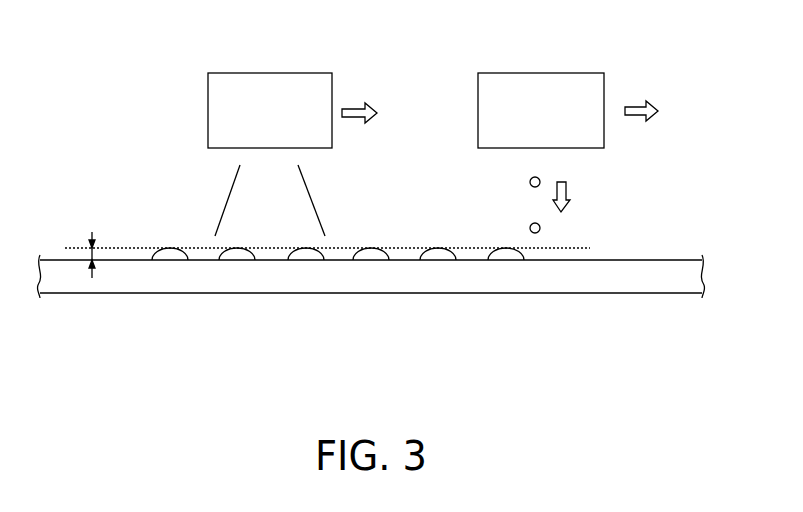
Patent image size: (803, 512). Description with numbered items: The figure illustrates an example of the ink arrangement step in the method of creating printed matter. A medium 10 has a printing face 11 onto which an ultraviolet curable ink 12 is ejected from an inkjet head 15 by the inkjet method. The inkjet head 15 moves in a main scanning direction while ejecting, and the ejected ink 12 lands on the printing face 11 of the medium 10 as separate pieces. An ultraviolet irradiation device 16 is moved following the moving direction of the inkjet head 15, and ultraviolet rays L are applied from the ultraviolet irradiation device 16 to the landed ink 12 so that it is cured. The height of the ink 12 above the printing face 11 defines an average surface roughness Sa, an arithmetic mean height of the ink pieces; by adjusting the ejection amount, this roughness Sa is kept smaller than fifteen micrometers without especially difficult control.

The medium 10 is at (609, 295).
The printing face 11 is at (660, 258).
The ink 12 is at (503, 252).
The inkjet head 15 is at (550, 80).
The ultraviolet irradiation device 16 is at (302, 83).
The ultraviolet rays L is at (232, 187).
The average surface roughness Sa is at (72, 252).